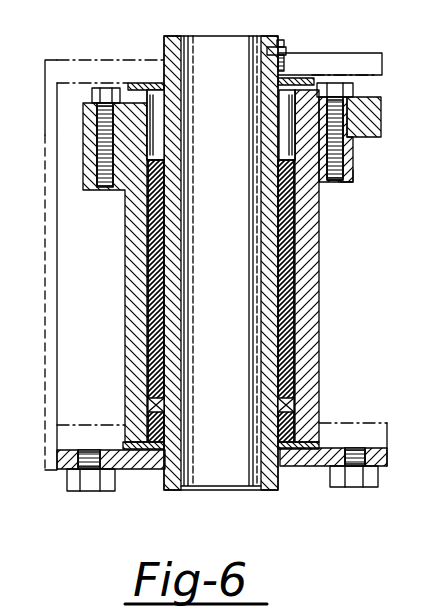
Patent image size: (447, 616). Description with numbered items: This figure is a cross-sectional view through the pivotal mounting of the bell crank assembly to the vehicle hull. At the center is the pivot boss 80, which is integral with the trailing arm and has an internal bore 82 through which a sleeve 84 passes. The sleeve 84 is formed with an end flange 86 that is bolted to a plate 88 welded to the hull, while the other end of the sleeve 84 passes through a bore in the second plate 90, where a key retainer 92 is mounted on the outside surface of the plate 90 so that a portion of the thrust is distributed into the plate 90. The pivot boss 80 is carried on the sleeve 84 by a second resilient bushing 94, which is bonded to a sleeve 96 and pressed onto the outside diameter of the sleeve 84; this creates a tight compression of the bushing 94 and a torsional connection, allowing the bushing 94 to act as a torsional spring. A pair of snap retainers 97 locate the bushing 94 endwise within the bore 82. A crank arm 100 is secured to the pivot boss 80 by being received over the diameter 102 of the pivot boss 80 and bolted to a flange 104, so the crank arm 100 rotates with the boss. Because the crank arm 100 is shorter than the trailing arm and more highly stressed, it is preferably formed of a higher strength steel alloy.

The pivot boss 80 is at (318, 404).
The internal bore 82 is at (150, 230).
The sleeve 84 is at (286, 468).
The end flange 86 is at (128, 470).
The plate 88 is at (66, 425).
The second plate 90 is at (78, 60).
The key retainer 92 is at (286, 50).
The second resilient bushing 94 is at (292, 256).
The sleeve 96 is at (296, 332).
The snap retainers 97 is at (145, 405).
The crank arm 100 is at (372, 135).
The diameter 102 is at (344, 104).
The flange 104 is at (355, 181).